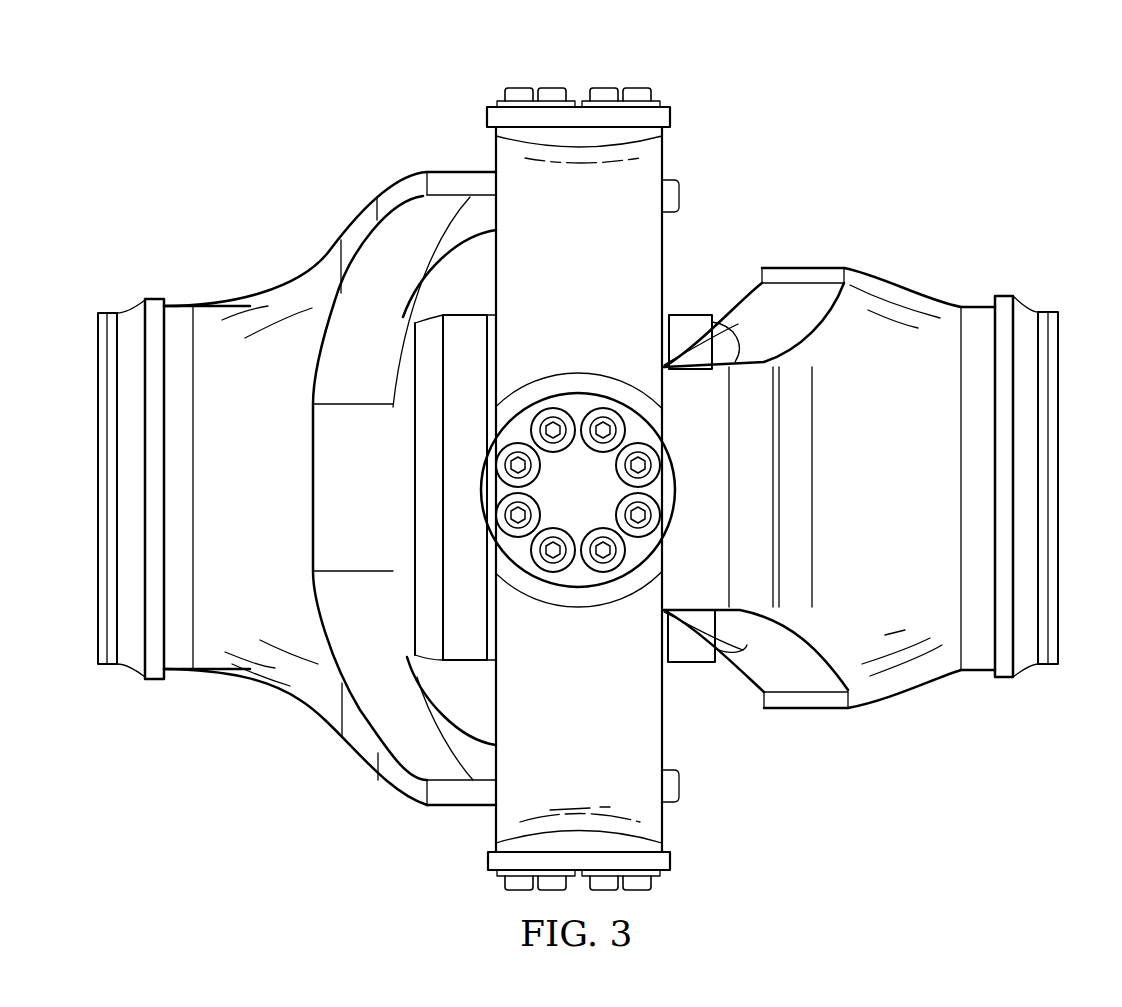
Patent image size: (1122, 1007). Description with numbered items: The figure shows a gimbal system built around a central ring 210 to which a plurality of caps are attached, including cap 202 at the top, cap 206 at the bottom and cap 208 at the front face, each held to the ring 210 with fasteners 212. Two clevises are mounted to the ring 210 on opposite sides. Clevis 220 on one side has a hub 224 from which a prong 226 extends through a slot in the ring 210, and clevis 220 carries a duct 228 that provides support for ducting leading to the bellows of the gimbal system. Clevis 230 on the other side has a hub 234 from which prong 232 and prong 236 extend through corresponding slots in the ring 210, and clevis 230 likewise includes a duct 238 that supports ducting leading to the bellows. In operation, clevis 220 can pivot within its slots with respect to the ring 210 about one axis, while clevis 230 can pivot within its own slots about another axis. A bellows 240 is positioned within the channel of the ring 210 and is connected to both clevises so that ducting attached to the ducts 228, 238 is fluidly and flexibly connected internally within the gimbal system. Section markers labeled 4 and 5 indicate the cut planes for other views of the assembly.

The cap 202 is at (672, 117).
The cap 206 is at (672, 863).
The cap 208 is at (603, 398).
The ring 210 is at (602, 234).
The fasteners 212 is at (640, 86).
The clevis 220 is at (927, 304).
The hub 224 is at (922, 668).
The prong 226 is at (680, 593).
The duct 228 is at (1047, 310).
The clevis 230 is at (227, 674).
The prong 232 is at (453, 172).
The hub 234 is at (280, 298).
The prong 236 is at (455, 806).
The duct 238 is at (108, 310).
The bellows 240 is at (467, 667).
The section line 4- 4 is at (578, 363).
The section line 5- 5 is at (388, 486).